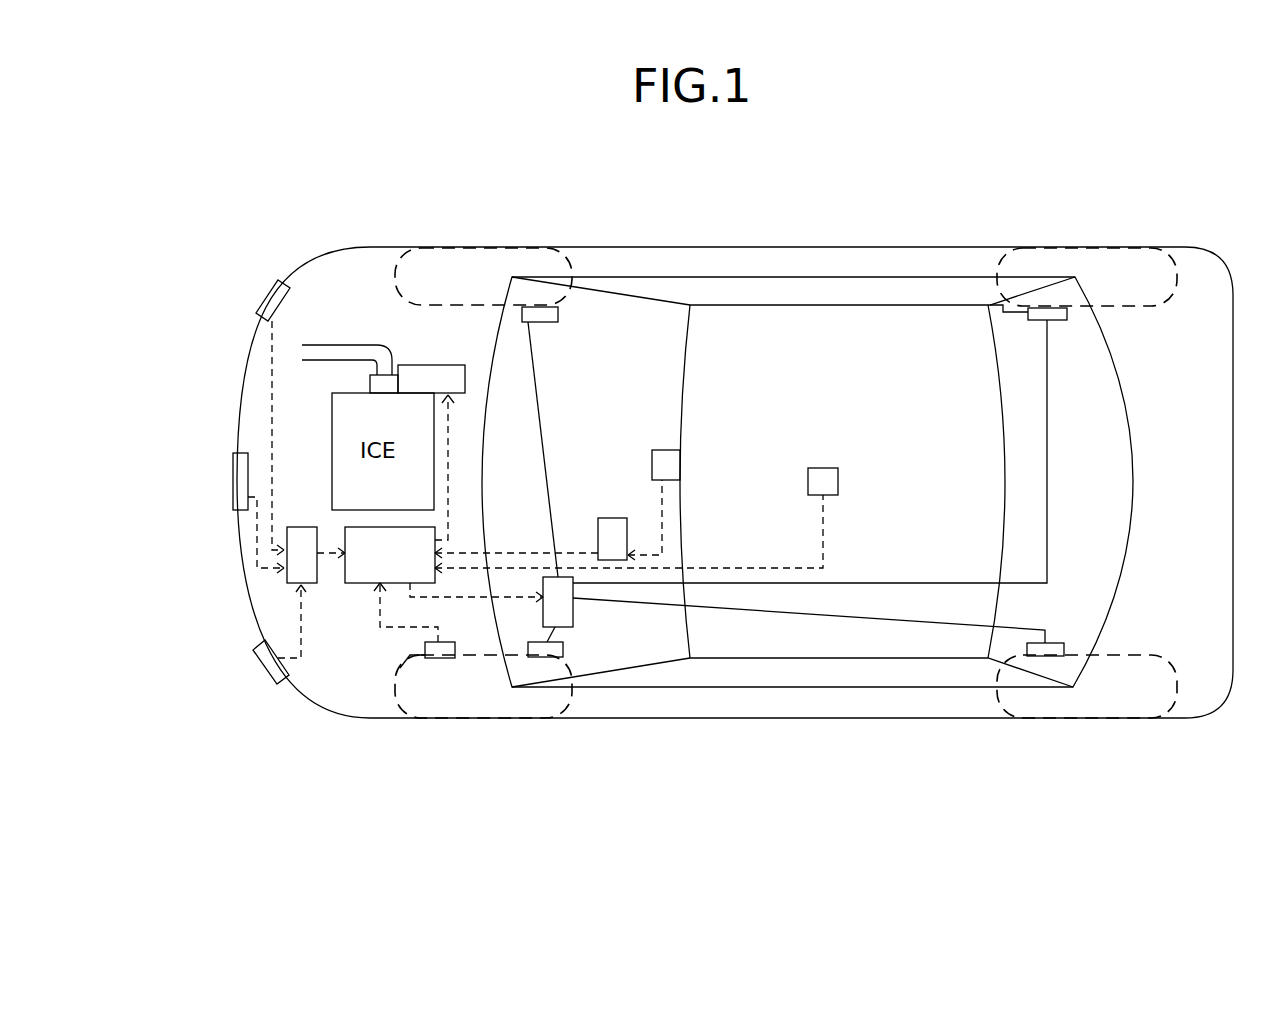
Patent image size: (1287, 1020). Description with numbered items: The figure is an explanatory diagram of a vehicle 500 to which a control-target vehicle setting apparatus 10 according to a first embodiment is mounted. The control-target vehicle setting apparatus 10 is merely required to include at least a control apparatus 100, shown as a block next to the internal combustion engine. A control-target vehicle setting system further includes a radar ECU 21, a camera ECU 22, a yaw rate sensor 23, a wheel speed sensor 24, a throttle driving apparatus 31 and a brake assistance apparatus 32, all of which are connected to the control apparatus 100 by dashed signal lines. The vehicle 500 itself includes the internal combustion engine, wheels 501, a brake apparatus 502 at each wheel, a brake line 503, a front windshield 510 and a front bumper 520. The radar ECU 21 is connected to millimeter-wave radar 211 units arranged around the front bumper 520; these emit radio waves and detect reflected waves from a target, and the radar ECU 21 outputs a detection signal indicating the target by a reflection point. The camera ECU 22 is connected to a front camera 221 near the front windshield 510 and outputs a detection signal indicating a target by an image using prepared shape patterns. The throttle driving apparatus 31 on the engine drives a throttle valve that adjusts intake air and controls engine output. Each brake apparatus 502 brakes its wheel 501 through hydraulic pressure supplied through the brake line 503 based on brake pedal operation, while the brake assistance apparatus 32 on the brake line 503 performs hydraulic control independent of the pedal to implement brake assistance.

The control-target vehicle setting apparatus 10 is at (345, 737).
The vehicle 500 is at (810, 237).
The wheels 501 is at (478, 250).
The brake apparatus 502 is at (558, 308).
The brake line 503 is at (540, 392).
The front windshield 510 is at (667, 396).
The front bumper 520 is at (243, 362).
The millimeter-wave radar 211 is at (267, 296).
The front camera 221 is at (673, 470).
The radar ECU 21 is at (316, 555).
The camera ECU 22 is at (548, 520).
The yaw rate sensor 23 is at (636, 520).
The wheel speed sensor 24 is at (400, 668).
The throttle driving apparatus 31 is at (431, 452).
The brake assistance apparatus 32 is at (491, 602).
The control apparatus 100 is at (390, 555).